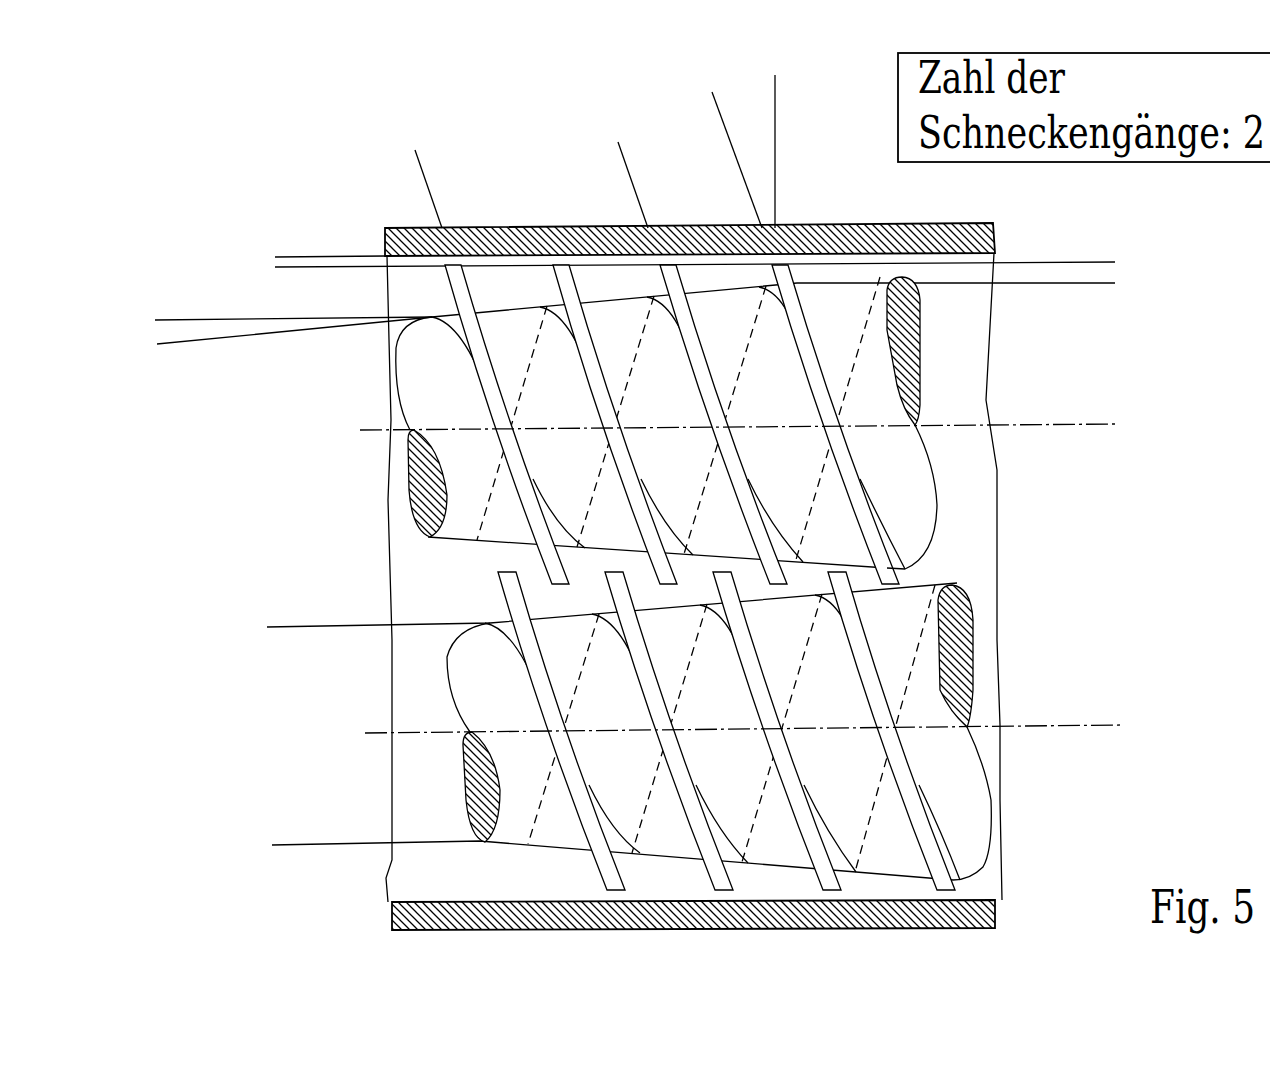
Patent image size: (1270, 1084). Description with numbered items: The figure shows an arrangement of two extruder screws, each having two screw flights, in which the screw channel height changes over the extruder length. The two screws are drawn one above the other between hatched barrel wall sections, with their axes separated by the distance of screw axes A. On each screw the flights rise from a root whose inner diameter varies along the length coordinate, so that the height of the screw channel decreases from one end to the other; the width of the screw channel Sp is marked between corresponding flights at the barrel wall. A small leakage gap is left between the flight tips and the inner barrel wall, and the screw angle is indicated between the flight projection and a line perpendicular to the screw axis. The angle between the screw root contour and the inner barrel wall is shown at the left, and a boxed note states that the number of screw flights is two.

The width of the screw channel Sp is at (608, 155).
The distance of screw axes A is at (1105, 436).